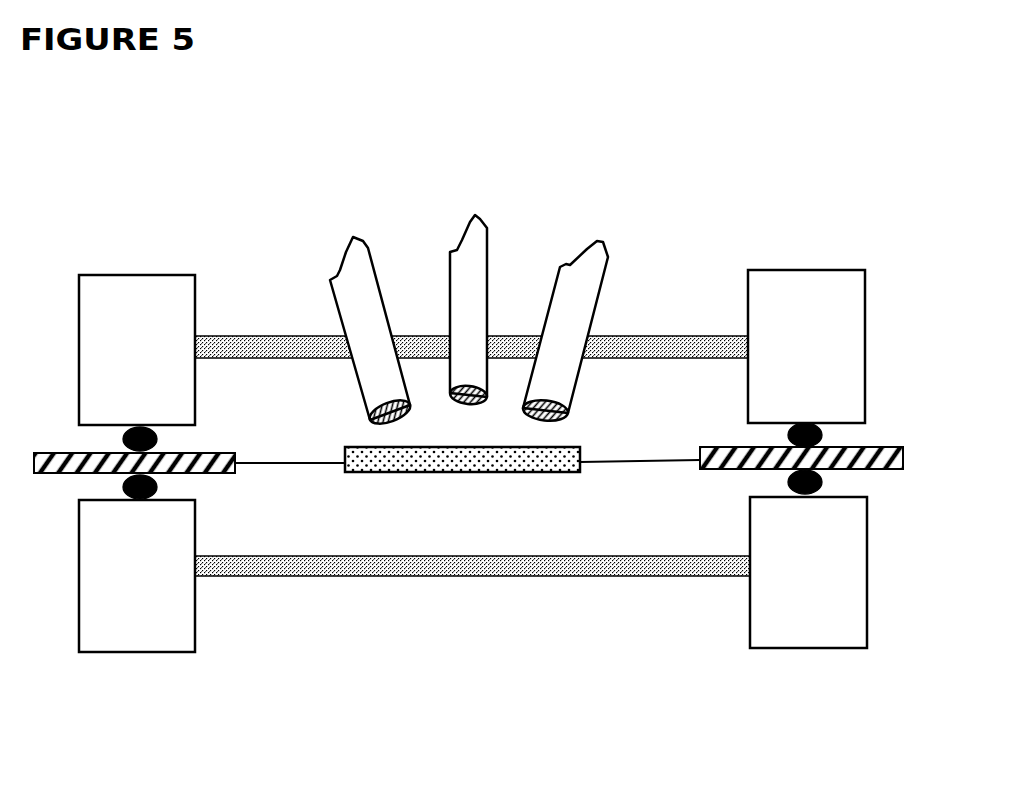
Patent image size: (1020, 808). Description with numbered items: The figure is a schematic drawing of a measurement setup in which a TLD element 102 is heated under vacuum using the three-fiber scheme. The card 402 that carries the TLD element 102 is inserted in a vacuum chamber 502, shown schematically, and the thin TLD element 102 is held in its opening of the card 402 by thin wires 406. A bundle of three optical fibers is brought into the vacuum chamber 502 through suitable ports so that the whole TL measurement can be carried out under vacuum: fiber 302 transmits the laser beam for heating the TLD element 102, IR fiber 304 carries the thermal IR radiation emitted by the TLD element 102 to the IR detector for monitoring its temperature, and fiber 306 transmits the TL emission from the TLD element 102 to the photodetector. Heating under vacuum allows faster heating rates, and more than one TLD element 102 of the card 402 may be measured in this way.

The TLD element 102 is at (442, 458).
The fiber 302 is at (371, 304).
The IR fiber 304 is at (602, 300).
The fiber 306 is at (486, 284).
The card 402 is at (222, 465).
The thin wires 406 is at (647, 470).
The vacuum chamber 502 is at (832, 582).